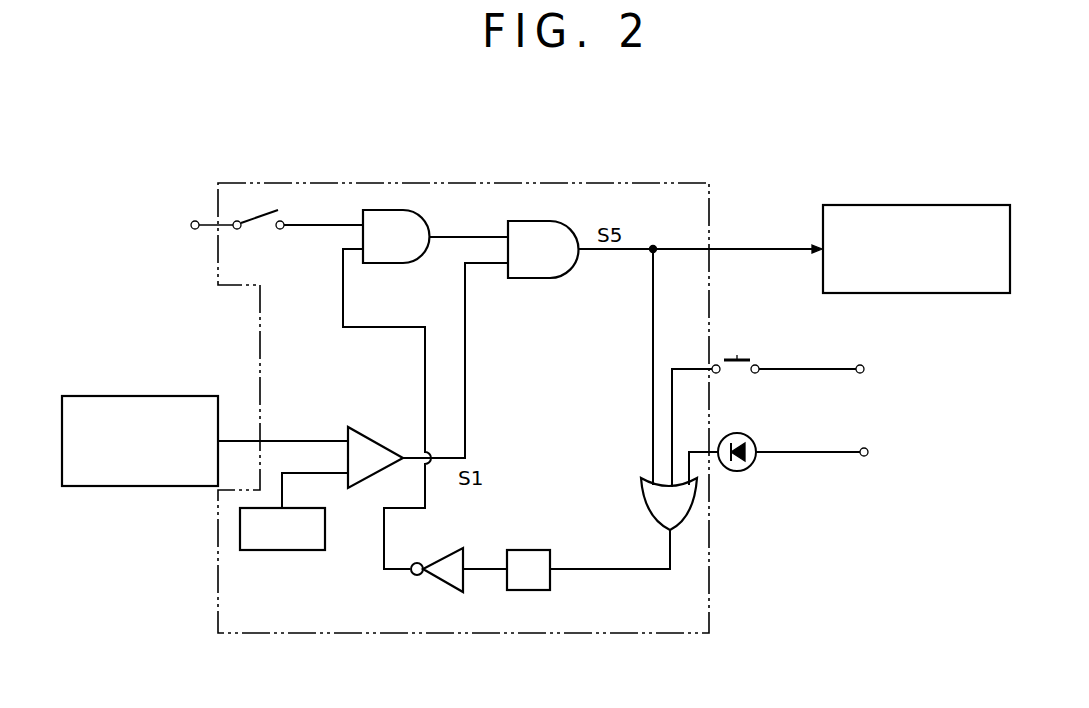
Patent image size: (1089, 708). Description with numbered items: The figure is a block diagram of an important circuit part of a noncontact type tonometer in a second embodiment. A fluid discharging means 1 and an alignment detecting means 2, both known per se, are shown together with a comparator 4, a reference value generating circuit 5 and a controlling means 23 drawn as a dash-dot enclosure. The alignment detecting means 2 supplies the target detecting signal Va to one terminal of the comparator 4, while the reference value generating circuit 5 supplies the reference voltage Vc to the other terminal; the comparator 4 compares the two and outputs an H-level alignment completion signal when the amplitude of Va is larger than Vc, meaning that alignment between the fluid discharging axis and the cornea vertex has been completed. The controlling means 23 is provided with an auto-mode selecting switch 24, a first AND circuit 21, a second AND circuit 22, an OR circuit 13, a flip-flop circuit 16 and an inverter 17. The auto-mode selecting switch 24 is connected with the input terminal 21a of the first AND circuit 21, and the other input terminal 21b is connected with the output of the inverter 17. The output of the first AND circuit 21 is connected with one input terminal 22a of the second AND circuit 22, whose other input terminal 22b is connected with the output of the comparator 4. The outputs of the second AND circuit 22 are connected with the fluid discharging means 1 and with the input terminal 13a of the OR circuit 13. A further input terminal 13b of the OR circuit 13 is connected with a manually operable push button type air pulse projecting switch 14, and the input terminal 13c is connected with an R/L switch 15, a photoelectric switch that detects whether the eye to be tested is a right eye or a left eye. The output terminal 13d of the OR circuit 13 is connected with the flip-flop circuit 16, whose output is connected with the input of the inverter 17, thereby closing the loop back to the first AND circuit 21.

The fluid discharging means 1 is at (835, 205).
The alignment detecting means 2 is at (198, 400).
The comparator 4 is at (379, 450).
The reference value generating circuit 5 is at (275, 549).
The OR circuit 13 is at (652, 509).
The input terminal of the OR circuit 13a is at (651, 470).
The input terminal of the OR circuit 13b is at (665, 462).
The input terminal of the OR circuit 13c is at (692, 468).
The output terminal of the OR circuit 13d is at (668, 548).
The push button type air pulse projecting switch 14 is at (738, 356).
The R/L switch 15 is at (738, 432).
The flip-flop circuit 16 is at (520, 590).
The inverter 17 is at (437, 559).
The first AND circuit 21 is at (404, 212).
The input terminal of the first AND circuit 21a is at (330, 223).
The input terminal of the first AND circuit 21b is at (352, 247).
The second AND circuit 22 is at (556, 230).
The input terminal of the second AND circuit 22a is at (473, 235).
The input terminal of the second AND circuit 22b is at (487, 266).
The controlling means 23 is at (412, 633).
The auto-mode selecting switch 24 is at (240, 180).